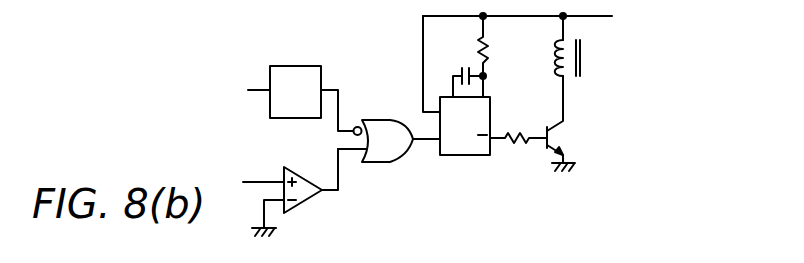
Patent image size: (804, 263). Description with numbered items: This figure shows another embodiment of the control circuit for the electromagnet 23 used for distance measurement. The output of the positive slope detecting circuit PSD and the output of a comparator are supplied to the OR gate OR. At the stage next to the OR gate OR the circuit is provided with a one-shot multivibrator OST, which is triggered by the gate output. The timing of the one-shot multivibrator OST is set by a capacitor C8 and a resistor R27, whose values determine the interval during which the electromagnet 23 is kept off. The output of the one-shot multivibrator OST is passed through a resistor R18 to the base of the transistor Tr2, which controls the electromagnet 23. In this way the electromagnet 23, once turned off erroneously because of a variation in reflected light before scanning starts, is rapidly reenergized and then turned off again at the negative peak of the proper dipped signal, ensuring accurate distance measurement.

The electromagnet 23 is at (585, 48).
The positive slope detecting circuit PSD is at (284, 92).
The OR gate OR is at (387, 141).
The one-shot multivibrator OST is at (476, 174).
The resistor R27 is at (502, 56).
The capacitor C8 is at (464, 72).
The resistor R18 is at (518, 151).
The transistor Tr2 is at (572, 123).